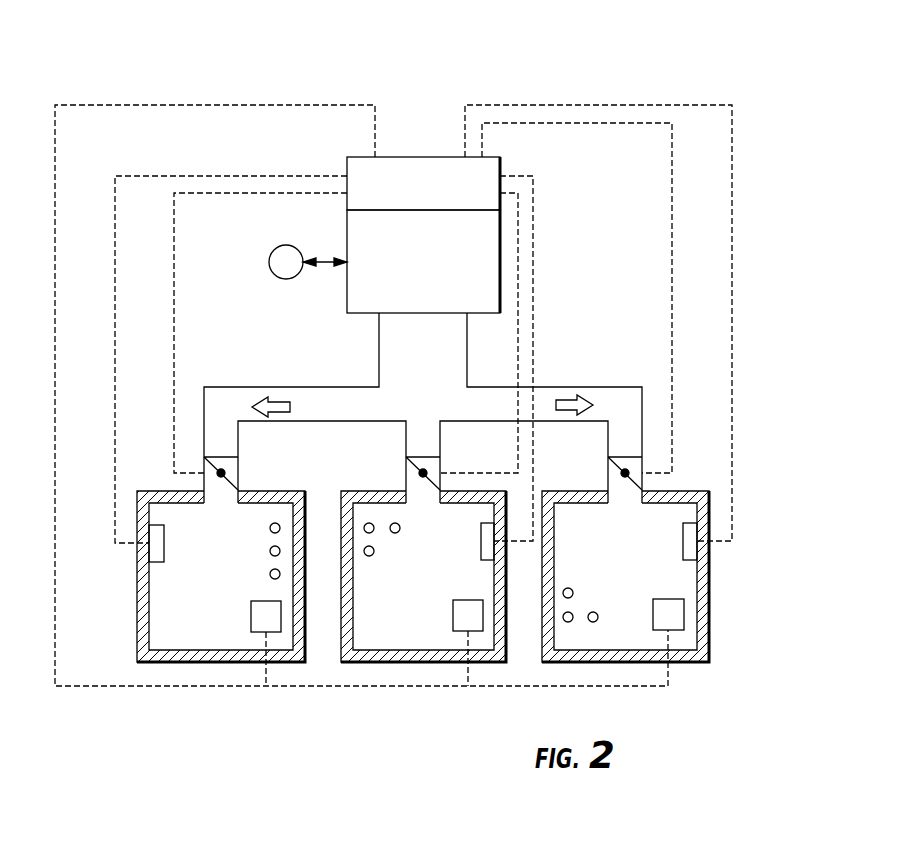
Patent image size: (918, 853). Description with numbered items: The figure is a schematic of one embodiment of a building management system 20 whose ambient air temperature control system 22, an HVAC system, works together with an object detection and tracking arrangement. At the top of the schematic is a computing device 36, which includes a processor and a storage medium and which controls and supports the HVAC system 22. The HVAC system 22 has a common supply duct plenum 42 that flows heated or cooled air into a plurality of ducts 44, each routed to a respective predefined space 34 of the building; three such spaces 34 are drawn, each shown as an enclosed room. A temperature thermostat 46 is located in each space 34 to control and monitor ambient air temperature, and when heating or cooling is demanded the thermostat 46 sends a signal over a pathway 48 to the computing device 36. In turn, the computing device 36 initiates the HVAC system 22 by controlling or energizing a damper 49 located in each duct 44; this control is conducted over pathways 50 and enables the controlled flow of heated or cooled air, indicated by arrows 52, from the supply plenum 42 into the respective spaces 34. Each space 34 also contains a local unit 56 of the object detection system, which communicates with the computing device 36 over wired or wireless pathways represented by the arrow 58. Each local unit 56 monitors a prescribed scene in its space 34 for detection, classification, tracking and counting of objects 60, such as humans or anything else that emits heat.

The building management system 20 is at (418, 93).
The ambient air temperature control system 22 is at (407, 262).
The predefined space 34 is at (201, 589).
The computing device 36 is at (407, 197).
The common supply duct plenum 42 is at (407, 357).
The duct 44 is at (209, 449).
The temperature thermostat 46 is at (164, 560).
The pathway 48 is at (115, 247).
The damper 49 is at (238, 473).
The pathway 50 is at (174, 298).
The arrows 52 is at (274, 398).
The local unit 56 is at (251, 610).
The arrow 58 is at (380, 686).
The object 60 is at (270, 551).